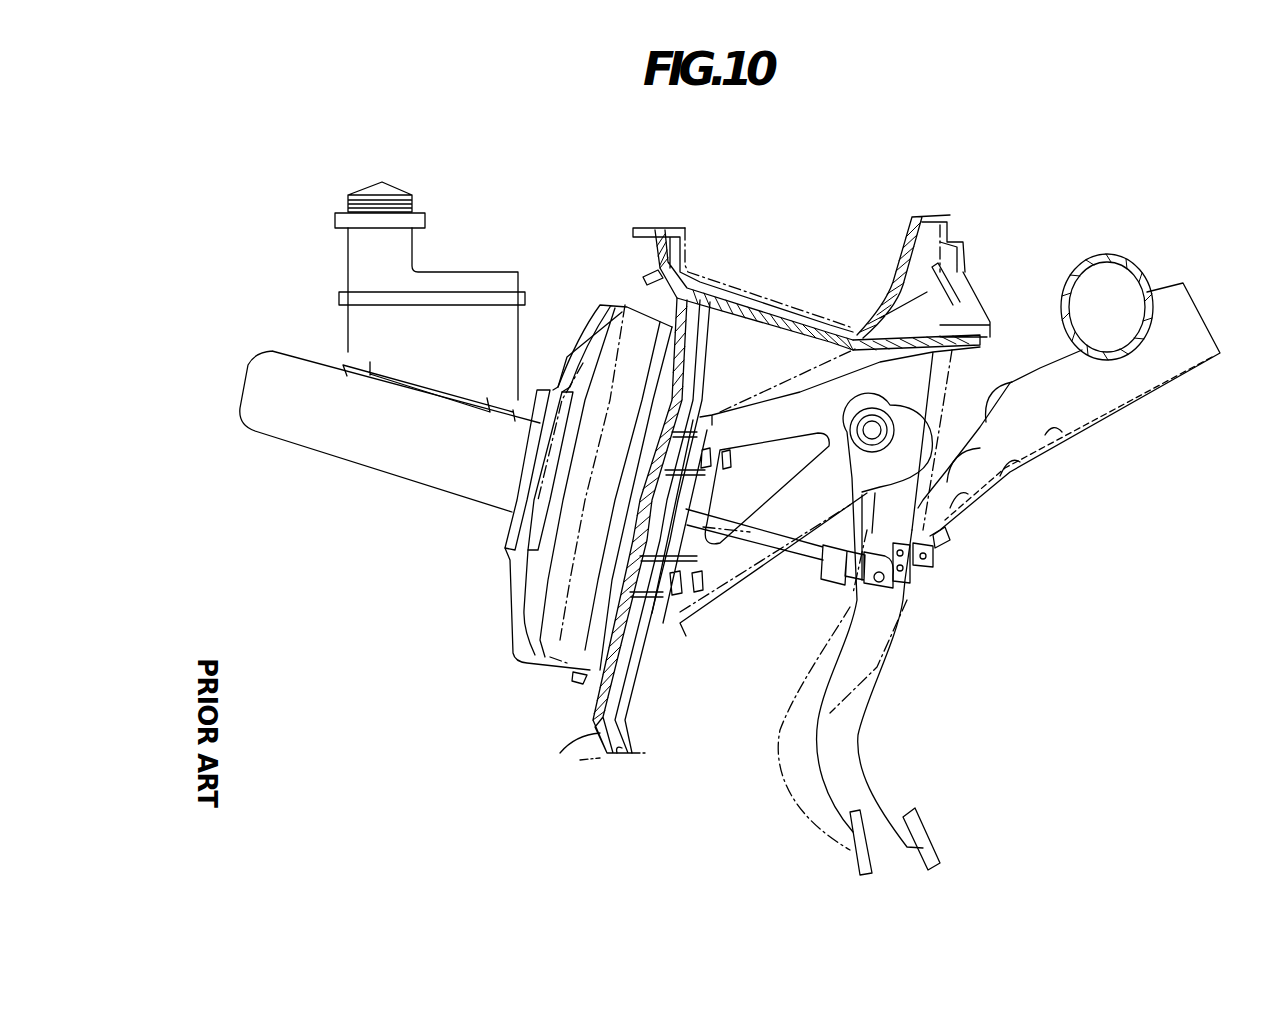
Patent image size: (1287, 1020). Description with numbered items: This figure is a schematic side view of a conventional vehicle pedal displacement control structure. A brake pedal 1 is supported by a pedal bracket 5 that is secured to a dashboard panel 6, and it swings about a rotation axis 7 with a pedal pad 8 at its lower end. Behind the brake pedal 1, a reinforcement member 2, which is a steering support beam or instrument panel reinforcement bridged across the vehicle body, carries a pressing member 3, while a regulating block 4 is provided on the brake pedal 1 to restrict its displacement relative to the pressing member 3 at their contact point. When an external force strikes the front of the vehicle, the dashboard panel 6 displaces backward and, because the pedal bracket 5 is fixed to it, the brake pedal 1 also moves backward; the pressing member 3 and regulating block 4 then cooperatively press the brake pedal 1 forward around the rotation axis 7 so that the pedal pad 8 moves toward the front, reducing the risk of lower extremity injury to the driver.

The brake pedal 1 is at (866, 748).
The reinforcement member 2 is at (1113, 280).
The pressing member 3 is at (993, 405).
The regulating block 4 is at (940, 525).
The pedal bracket 5 is at (793, 417).
The dashboard panel 6 is at (589, 760).
The rotation axis 7 is at (872, 425).
The pedal pad 8 is at (933, 835).